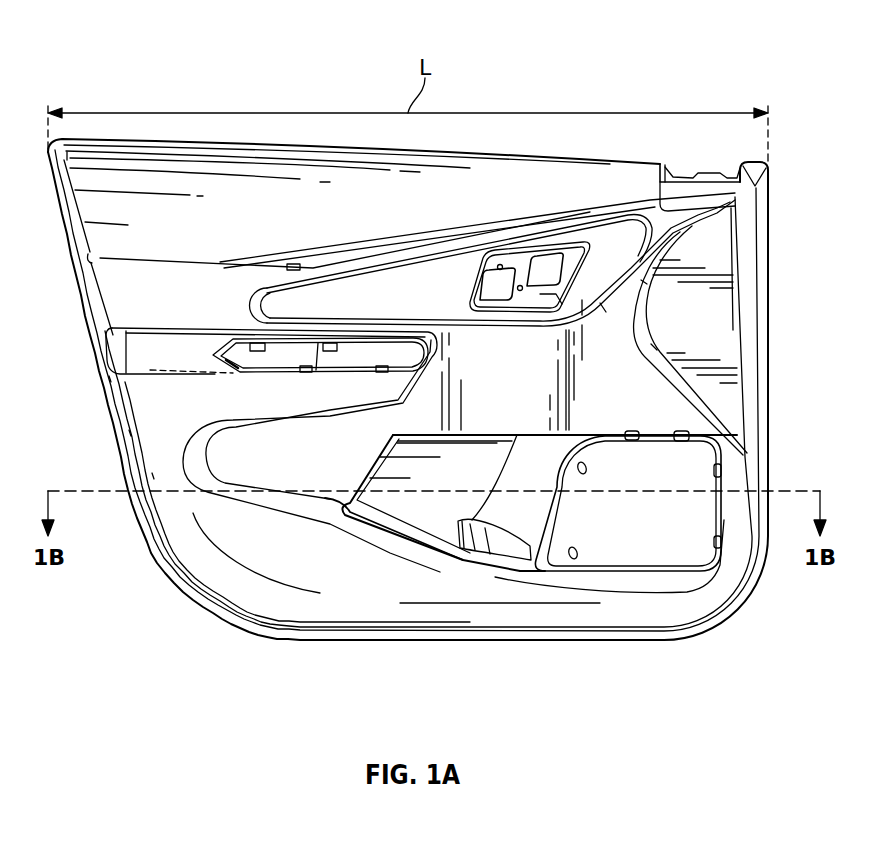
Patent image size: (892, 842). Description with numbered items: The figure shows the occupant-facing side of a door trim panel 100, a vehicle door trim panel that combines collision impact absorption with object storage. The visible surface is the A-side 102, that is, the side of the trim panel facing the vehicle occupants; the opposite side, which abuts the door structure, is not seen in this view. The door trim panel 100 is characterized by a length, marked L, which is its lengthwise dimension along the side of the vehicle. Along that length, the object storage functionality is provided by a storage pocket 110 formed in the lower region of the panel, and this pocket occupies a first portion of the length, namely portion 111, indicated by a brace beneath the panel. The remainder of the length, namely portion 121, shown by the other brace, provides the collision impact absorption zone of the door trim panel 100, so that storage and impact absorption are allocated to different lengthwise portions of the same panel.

The door trim panel 100 is at (126, 49).
The A-side 102 is at (180, 157).
The storage pocket 110 is at (551, 480).
The portion 111 is at (770, 663).
The portion 121 is at (370, 663).